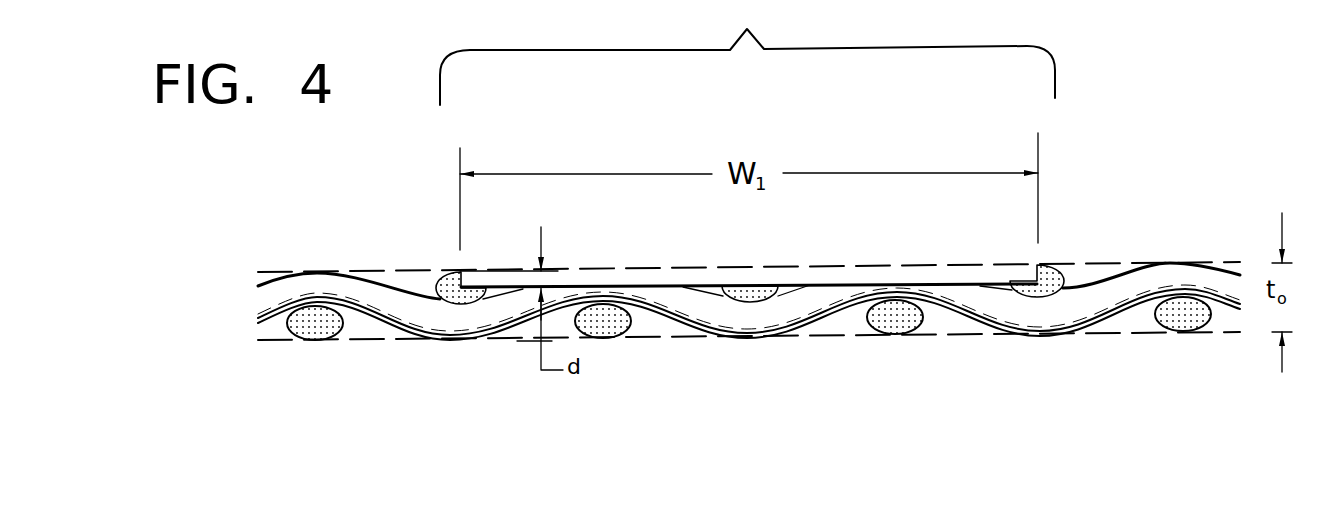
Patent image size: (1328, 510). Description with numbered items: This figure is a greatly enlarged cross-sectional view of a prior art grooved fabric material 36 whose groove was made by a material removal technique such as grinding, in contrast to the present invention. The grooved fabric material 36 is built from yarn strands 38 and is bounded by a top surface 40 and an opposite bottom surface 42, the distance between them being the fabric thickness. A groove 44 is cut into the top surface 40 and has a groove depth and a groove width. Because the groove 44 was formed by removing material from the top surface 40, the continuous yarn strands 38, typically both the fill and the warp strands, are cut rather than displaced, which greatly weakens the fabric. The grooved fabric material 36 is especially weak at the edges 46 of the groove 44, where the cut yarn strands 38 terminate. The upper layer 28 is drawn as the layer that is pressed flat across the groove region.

The upper layer sheet 28 is at (840, 284).
The grooved fabric material 36 is at (1143, 175).
The yarn strands 38 is at (318, 342).
The top surface 40 is at (393, 272).
The bottom surface 42 is at (377, 343).
The groove 44 is at (747, 53).
The edges 46 is at (462, 272).